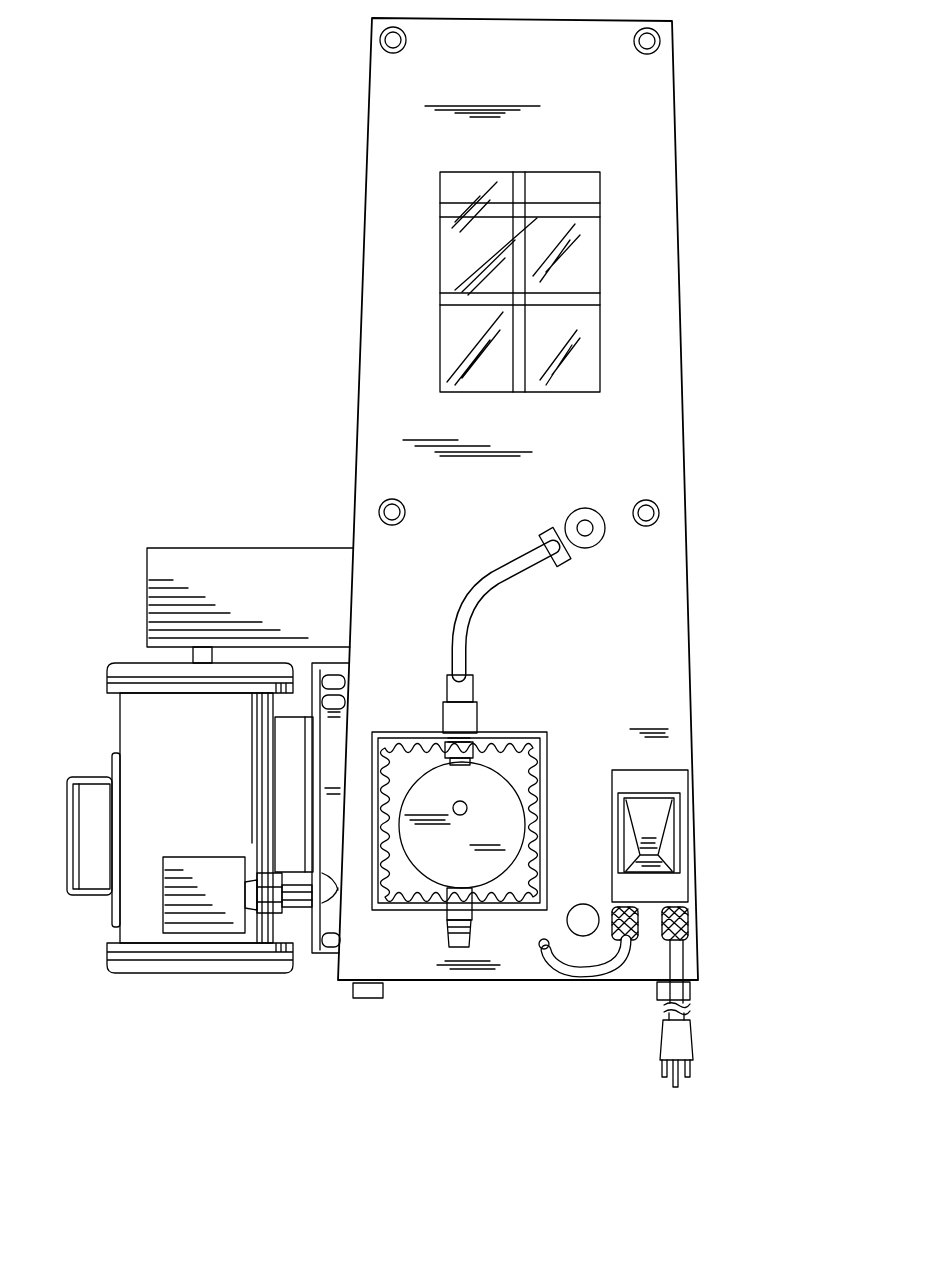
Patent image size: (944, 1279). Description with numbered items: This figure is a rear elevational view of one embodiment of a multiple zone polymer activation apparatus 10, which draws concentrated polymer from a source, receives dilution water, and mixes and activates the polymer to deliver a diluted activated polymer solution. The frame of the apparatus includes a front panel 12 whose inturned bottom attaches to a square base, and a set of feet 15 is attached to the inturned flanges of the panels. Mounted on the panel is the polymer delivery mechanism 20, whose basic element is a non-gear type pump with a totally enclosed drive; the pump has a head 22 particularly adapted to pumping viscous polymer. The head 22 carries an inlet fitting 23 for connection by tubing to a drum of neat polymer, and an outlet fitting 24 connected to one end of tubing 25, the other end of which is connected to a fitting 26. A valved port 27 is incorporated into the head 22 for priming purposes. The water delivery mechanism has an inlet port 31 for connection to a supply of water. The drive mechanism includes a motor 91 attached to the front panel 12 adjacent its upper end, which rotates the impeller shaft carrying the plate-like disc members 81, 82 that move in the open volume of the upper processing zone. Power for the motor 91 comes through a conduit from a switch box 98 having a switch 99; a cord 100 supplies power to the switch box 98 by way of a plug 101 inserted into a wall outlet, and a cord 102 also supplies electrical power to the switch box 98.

The polymer activation apparatus 10 is at (727, 197).
The front panel 12 is at (672, 340).
The feet 15 is at (355, 987).
The polymer delivery mechanism 20 is at (580, 738).
The head 22 is at (513, 818).
The inlet fitting 23 is at (447, 938).
The outlet fitting 24 is at (458, 733).
The tubing 25 is at (533, 563).
The fitting 26 is at (594, 548).
The valved port 27 is at (464, 803).
The inlet port 31 is at (580, 908).
The disc member 81 is at (557, 307).
The disc member 82 is at (573, 227).
The motor 91 is at (132, 757).
The switch box 98 is at (672, 893).
The switch 99 is at (657, 820).
The cord 100 is at (677, 958).
The plug 101 is at (683, 1042).
The cord 102 is at (593, 973).